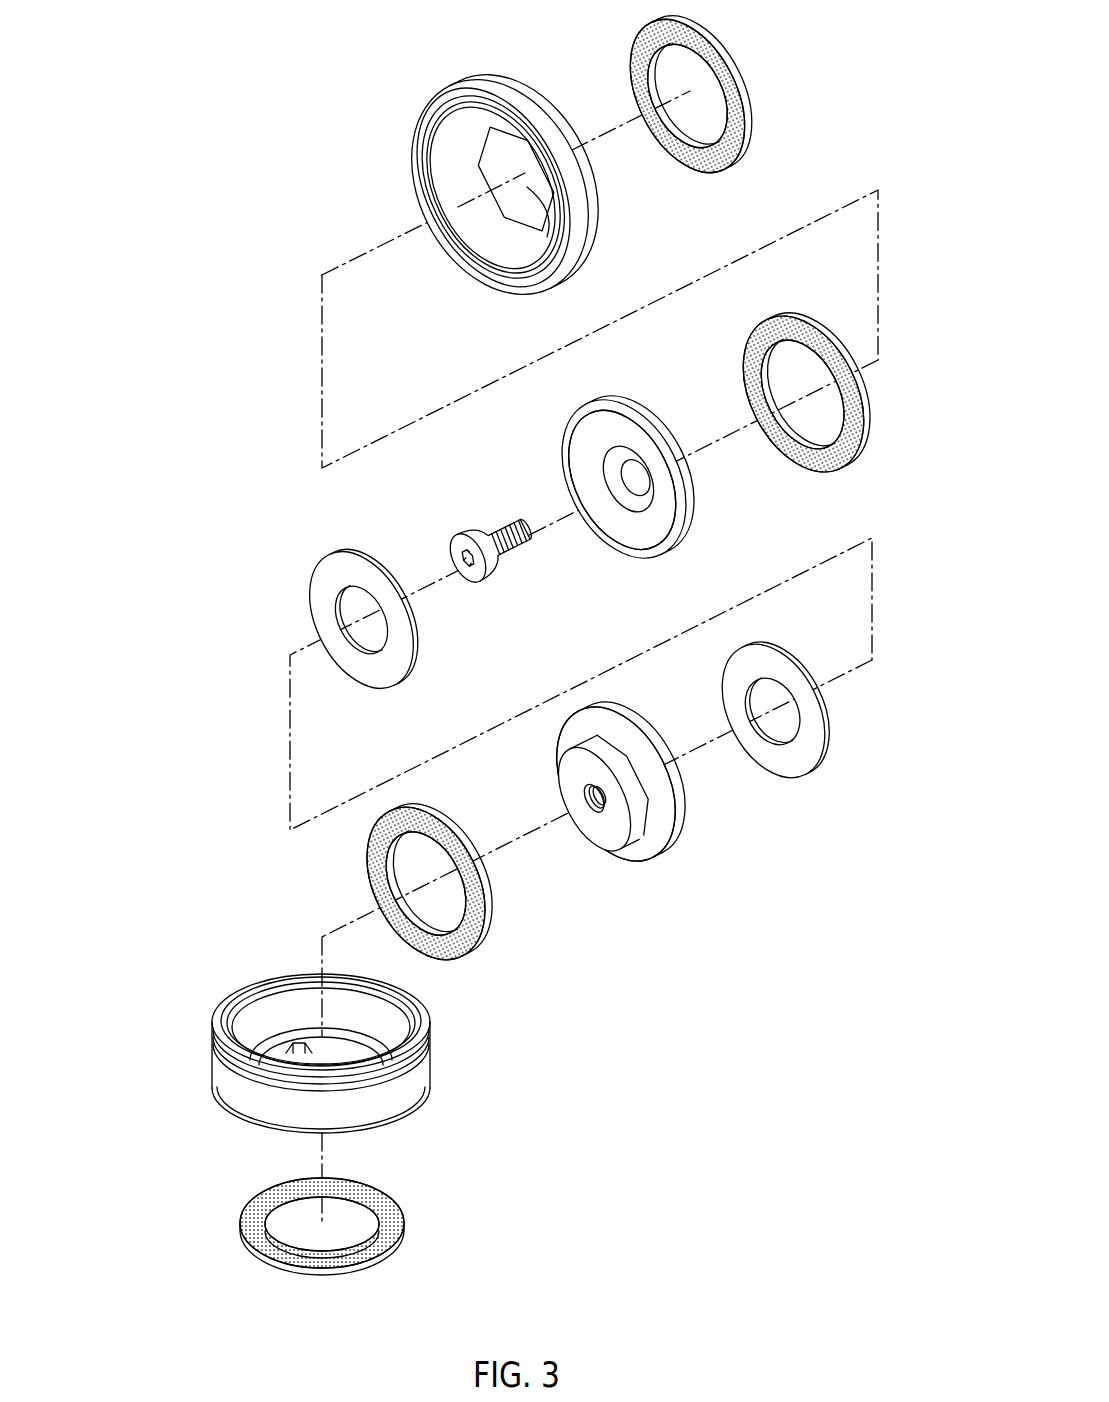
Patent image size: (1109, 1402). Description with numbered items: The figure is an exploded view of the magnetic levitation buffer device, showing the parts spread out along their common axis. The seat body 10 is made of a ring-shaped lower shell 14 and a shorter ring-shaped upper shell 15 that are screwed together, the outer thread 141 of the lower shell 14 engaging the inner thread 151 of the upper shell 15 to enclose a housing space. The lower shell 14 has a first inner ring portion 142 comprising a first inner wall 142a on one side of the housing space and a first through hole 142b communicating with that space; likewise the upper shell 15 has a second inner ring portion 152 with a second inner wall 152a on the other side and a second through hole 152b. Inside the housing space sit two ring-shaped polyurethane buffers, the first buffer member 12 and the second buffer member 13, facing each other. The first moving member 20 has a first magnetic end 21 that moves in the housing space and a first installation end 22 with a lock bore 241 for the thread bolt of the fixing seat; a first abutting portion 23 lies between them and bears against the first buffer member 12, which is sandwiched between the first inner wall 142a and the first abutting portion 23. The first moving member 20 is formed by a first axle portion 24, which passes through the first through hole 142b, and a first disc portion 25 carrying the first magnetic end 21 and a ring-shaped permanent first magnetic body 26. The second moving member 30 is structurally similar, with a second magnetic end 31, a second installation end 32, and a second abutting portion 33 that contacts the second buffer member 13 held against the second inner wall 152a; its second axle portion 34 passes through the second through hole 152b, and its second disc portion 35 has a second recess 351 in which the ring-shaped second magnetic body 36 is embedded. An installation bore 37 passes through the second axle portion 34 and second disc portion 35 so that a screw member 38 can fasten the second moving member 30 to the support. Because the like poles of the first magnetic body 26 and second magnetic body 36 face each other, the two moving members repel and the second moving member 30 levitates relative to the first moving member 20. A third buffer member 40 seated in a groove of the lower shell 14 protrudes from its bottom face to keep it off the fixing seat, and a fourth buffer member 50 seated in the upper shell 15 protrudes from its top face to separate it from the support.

The seat body 10 is at (320, 1028).
The first buffer member 12 is at (475, 917).
The second buffer member 13 is at (866, 397).
The lower shell 14 is at (397, 1100).
The outer thread 141 is at (420, 1052).
The first inner ring portion 142 is at (244, 966).
The first inner wall 142a is at (265, 1048).
The first through hole 142b is at (310, 1063).
The upper shell 15 is at (478, 83).
The inner thread 151 is at (468, 247).
The second inner ring portion 152 is at (601, 192).
The second inner wall 152a is at (545, 242).
The second through hole 152b is at (527, 188).
The first moving member 20 is at (641, 803).
The first magnetic end 21 is at (688, 810).
The first installation end 22 is at (600, 828).
The first abutting portion 23 is at (625, 738).
The first axle portion 24 is at (637, 828).
The lock bore 241 is at (582, 793).
The first disc portion 25 is at (675, 840).
The first magnetic body 26 is at (808, 748).
The second moving member 30 is at (616, 483).
The second magnetic end 31 is at (608, 413).
The second installation end 32 is at (683, 440).
The second abutting portion 33 is at (693, 522).
The second axle portion 34 is at (693, 475).
The second disc portion 35 is at (687, 532).
The second recess 351 is at (617, 520).
The second magnetic body 36 is at (355, 572).
The installation bore 37 is at (620, 485).
The screw member 38 is at (485, 596).
The third buffer member 40 is at (393, 1225).
The fourth buffer member 50 is at (748, 110).